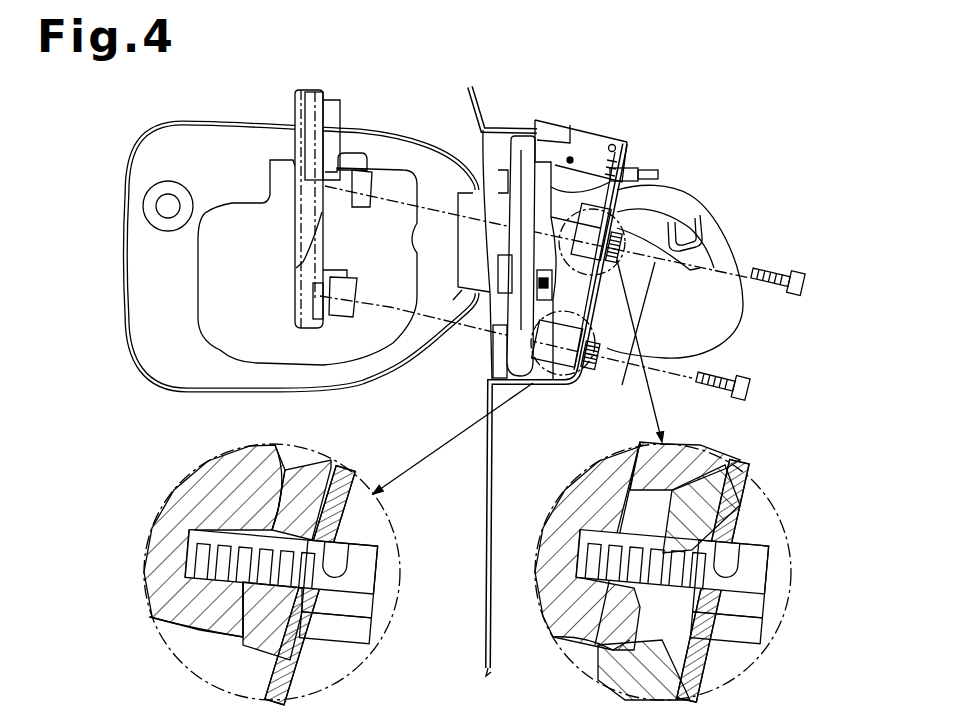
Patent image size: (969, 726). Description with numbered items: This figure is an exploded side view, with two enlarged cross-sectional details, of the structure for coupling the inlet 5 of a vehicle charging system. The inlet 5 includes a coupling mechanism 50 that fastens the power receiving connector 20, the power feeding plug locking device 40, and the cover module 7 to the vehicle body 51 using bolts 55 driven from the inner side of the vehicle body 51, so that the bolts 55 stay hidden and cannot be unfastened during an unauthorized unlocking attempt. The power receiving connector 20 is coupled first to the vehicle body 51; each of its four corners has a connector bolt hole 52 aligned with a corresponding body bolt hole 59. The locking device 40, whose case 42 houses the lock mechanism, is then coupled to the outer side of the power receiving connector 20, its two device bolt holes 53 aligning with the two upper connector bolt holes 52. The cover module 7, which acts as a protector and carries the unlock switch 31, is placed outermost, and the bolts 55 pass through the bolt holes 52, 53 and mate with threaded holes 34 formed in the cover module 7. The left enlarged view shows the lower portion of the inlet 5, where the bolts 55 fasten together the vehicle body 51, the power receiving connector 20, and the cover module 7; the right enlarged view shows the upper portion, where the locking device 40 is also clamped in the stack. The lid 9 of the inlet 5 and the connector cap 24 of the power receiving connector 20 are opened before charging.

The inlet 5 is at (413, 125).
The cover module 7 is at (295, 102).
The lid 9 is at (126, 245).
The power receiving connector 20 is at (572, 384).
The connector cap 24 is at (488, 323).
The unlock switch 31 is at (478, 182).
The threaded holes 34 is at (240, 548).
The power feeding plug locking device 40 is at (622, 125).
The case 42 is at (580, 121).
The coupling mechanism 50 is at (130, 447).
The vehicle body 51 is at (478, 103).
The connector bolt hole 52 is at (293, 566).
The device bolt holes 53 is at (637, 548).
The bolts 55 is at (655, 192).
The body bolt hole 59 is at (378, 548).